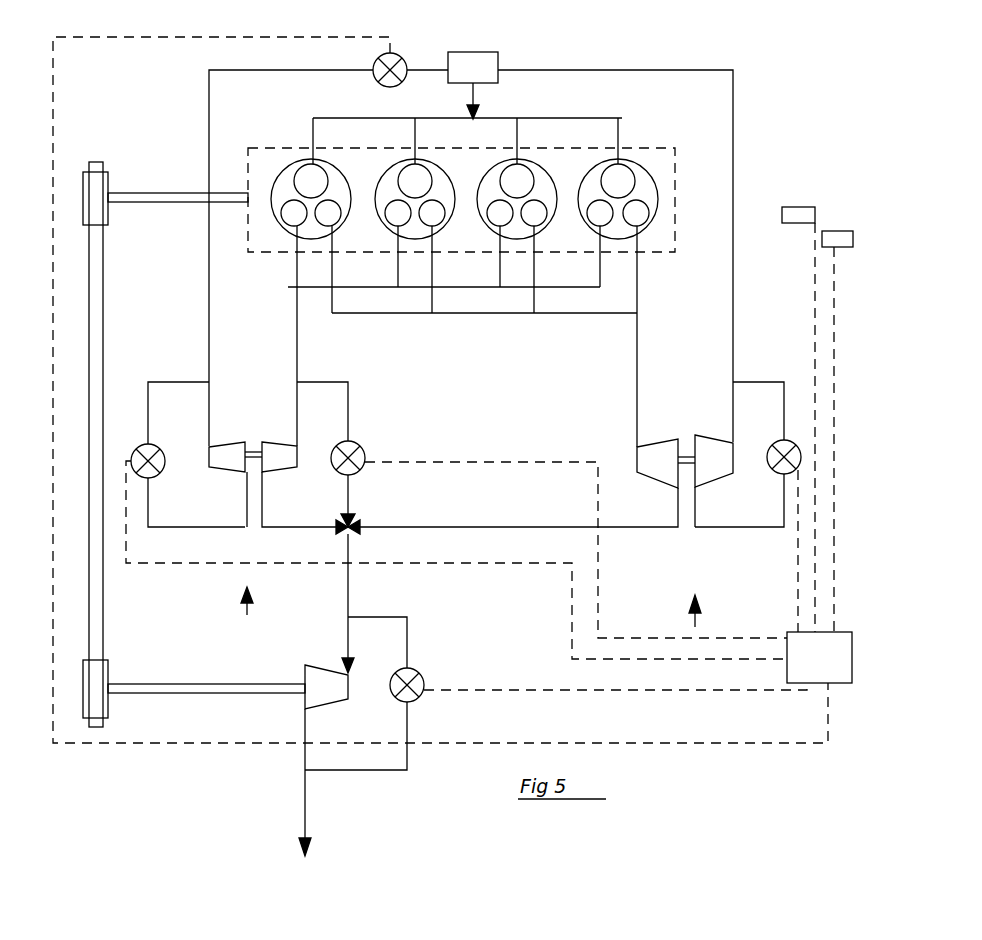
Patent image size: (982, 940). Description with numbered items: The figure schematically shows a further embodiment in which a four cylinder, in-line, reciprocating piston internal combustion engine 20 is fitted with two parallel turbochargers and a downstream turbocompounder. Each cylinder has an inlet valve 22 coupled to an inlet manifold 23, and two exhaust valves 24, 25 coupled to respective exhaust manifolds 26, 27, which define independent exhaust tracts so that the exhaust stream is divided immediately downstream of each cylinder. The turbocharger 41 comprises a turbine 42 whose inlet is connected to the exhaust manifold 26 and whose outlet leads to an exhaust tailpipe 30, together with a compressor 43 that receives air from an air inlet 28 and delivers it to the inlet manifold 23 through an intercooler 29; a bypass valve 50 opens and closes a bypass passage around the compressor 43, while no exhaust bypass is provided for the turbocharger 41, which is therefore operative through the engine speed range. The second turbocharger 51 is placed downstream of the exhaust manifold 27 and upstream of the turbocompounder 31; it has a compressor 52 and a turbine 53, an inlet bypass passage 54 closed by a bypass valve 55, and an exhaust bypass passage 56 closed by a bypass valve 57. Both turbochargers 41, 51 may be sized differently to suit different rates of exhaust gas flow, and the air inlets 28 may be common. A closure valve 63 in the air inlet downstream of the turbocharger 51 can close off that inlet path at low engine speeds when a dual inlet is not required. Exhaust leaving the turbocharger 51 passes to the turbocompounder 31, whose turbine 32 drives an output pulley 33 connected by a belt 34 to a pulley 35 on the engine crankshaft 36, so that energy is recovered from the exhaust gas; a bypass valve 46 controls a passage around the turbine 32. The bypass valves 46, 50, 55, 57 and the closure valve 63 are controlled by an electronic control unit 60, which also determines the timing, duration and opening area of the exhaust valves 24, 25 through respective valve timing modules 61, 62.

The internal combustion engine 20 is at (675, 140).
The inlet valve 22 is at (308, 177).
The inlet manifold 23 is at (545, 117).
The exhaust valve 24 is at (638, 212).
The exhaust valve 25 is at (603, 217).
The exhaust manifold 26 is at (493, 314).
The exhaust manifold 27 is at (288, 287).
The air inlet 28 is at (245, 590).
The intercooler 29 is at (500, 56).
The exhaust tailpipe 30 is at (307, 818).
The turbocompounder 31 is at (243, 676).
The turbine 32 is at (343, 670).
The output pulley 33 is at (110, 680).
The belt 34 is at (108, 363).
The pulley 35 is at (108, 183).
The engine crankshaft 36 is at (184, 172).
The turbocharger 41 is at (690, 422).
The turbine 42 is at (712, 472).
The compressor 43 is at (661, 470).
The bypass valve 46 is at (422, 675).
The bypass valve 50 is at (790, 440).
The second turbocharger 51 is at (256, 424).
The compressor 52 is at (219, 462).
The turbine 53 is at (280, 462).
The inlet bypass passage 54 is at (173, 381).
The bypass valve 55 is at (160, 447).
The exhaust bypass passage 56 is at (348, 395).
The bypass valve 57 is at (364, 453).
The electronic control unit 60 is at (824, 668).
The valve timing module 61 is at (798, 206).
The valve timing module 62 is at (836, 230).
The closure valve 63 is at (401, 57).